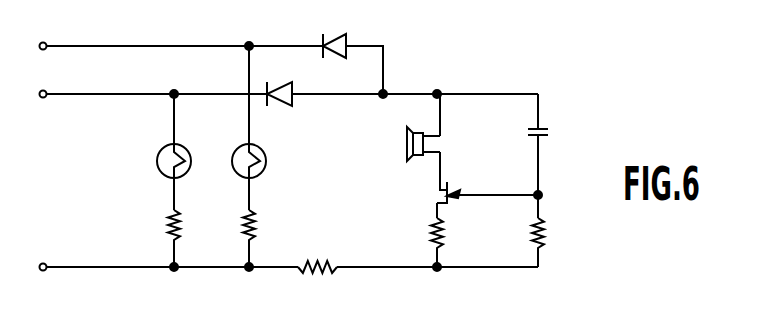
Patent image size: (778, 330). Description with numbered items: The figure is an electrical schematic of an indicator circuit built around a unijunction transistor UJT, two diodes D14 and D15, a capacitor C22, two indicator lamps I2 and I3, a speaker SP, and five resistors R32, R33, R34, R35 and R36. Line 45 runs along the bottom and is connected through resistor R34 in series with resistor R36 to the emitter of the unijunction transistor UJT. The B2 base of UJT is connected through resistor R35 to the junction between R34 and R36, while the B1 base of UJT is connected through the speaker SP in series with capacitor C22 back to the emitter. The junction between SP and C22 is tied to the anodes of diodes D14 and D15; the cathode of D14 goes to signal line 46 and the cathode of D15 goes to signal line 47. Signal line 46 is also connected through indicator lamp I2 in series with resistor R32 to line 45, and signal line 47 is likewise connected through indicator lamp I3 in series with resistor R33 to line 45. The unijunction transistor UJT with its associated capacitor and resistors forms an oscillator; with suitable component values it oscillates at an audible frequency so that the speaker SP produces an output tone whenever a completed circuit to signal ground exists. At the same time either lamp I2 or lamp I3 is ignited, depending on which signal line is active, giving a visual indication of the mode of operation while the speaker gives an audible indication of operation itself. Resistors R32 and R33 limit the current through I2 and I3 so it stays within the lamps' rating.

The signal line 47 is at (139, 46).
The signal line 46 is at (118, 94).
The line 45 is at (123, 267).
The diode D15 is at (351, 20).
The diode D14 is at (290, 100).
The indicator lamp I2 is at (157, 163).
The indicator lamp I3 is at (264, 163).
The resistor R32 is at (179, 238).
The resistor R33 is at (254, 238).
The resistor R34 is at (344, 240).
The resistor R35 is at (444, 250).
The resistor R36 is at (545, 250).
The capacitor C22 is at (548, 134).
The speaker SP is at (407, 148).
The unijunction transistor UJT is at (456, 188).